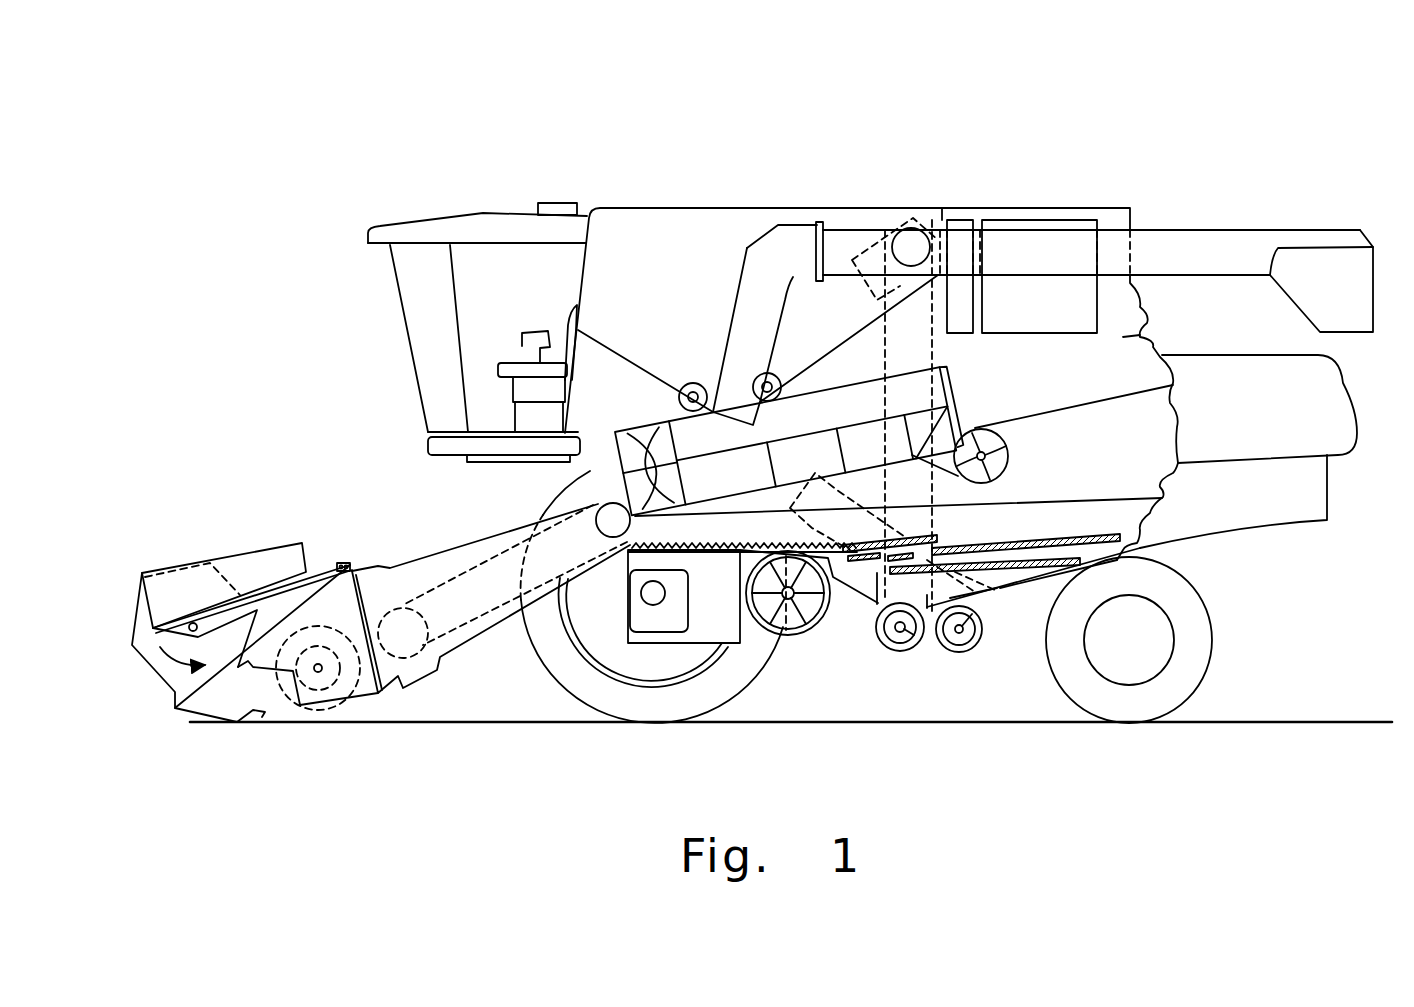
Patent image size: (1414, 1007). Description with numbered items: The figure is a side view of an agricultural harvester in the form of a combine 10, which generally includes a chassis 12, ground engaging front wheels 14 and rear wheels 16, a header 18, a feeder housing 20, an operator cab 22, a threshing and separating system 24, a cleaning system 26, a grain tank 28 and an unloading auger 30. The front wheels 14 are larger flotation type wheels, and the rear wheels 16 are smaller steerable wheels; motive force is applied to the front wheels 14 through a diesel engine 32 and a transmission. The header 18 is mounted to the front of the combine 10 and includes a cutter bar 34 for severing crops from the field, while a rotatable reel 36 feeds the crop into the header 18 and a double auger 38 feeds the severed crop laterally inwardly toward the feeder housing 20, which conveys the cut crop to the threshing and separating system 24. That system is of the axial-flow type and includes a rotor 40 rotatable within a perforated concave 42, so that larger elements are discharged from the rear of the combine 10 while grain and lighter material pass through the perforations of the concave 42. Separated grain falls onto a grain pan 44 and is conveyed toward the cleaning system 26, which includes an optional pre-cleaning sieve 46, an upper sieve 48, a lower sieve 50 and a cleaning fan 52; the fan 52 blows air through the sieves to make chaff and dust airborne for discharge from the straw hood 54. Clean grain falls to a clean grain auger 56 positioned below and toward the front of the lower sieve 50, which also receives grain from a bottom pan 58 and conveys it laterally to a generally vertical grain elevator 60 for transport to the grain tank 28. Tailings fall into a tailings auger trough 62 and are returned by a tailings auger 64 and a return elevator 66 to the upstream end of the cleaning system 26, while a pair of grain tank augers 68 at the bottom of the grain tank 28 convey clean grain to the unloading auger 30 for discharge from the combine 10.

The combine 10 is at (468, 192).
The chassis 12 is at (1140, 555).
The front wheels 14 is at (557, 677).
The rear wheels 16 is at (1207, 660).
The header 18 is at (228, 536).
The feeder housing 20 is at (447, 548).
The operator cab 22 is at (403, 315).
The threshing and separating system 24 is at (554, 482).
The cleaning system 26 is at (856, 660).
The grain tank 28 is at (645, 215).
The unloading auger 30 is at (1225, 238).
The diesel engine 32 is at (1027, 222).
The cutter bar 34 is at (242, 725).
The rotatable reel 36 is at (144, 617).
The double auger 38 is at (320, 693).
The rotor 40 is at (642, 440).
The perforated concave 42 is at (830, 410).
The grain pan 44 is at (627, 565).
The pre-cleaning sieve 46 is at (938, 543).
The upper sieve 48 is at (1031, 541).
The lower sieve 50 is at (1010, 573).
The cleaning fan 52 is at (792, 625).
The straw hood 54 is at (1337, 398).
The clean grain auger 56 is at (905, 640).
The bottom pan 58 is at (1037, 577).
The grain elevator 60 is at (935, 346).
The tailings auger trough 62 is at (1052, 583).
The tailings auger 64 is at (958, 652).
The return elevator 66 is at (877, 520).
The grain tank augers 68 is at (693, 383).